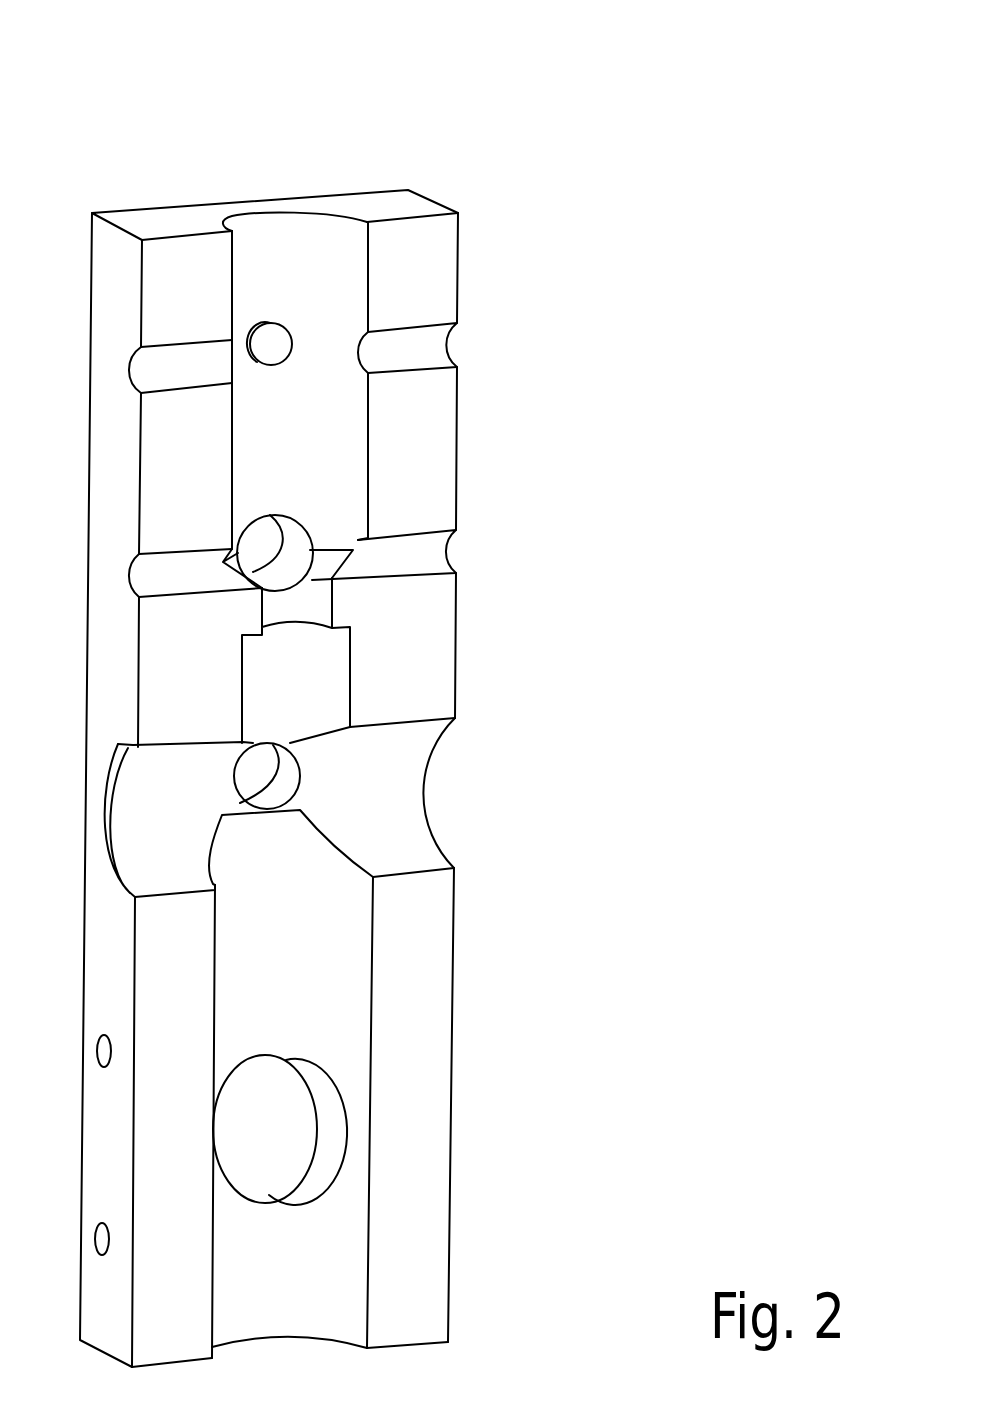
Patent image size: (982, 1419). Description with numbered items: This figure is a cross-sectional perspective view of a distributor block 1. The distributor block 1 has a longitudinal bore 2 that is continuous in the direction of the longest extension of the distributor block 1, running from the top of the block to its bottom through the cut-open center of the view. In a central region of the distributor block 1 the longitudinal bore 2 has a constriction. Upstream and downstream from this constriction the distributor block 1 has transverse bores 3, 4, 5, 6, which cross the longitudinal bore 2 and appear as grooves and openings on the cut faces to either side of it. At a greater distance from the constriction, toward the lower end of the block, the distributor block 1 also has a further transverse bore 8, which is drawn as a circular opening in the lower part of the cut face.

The distributor block 1 is at (425, 275).
The longitudinal bore 2 is at (287, 240).
The transverse bore 3 is at (402, 797).
The transverse bore 4 is at (279, 771).
The transverse bore 5 is at (287, 515).
The transverse bore 6 is at (463, 342).
The further transverse bore 8 is at (265, 1140).